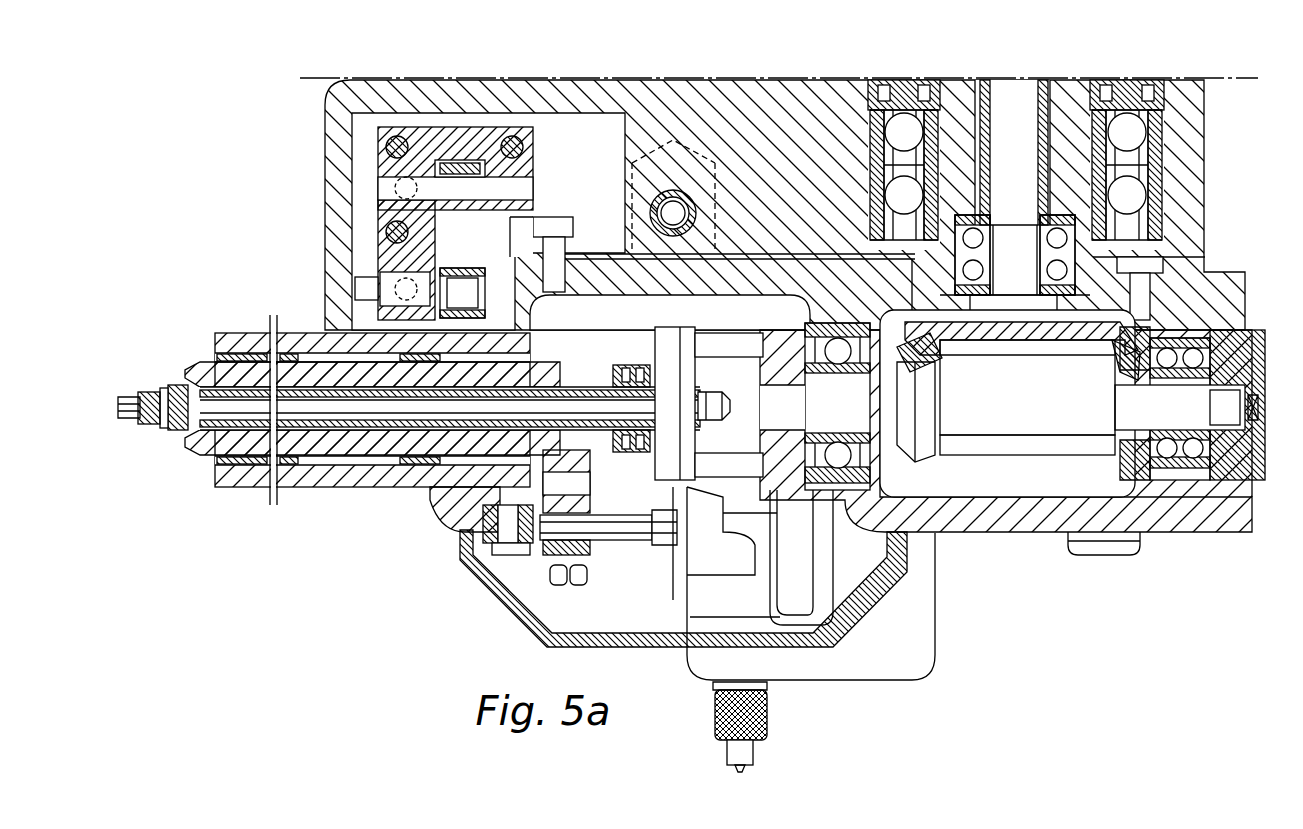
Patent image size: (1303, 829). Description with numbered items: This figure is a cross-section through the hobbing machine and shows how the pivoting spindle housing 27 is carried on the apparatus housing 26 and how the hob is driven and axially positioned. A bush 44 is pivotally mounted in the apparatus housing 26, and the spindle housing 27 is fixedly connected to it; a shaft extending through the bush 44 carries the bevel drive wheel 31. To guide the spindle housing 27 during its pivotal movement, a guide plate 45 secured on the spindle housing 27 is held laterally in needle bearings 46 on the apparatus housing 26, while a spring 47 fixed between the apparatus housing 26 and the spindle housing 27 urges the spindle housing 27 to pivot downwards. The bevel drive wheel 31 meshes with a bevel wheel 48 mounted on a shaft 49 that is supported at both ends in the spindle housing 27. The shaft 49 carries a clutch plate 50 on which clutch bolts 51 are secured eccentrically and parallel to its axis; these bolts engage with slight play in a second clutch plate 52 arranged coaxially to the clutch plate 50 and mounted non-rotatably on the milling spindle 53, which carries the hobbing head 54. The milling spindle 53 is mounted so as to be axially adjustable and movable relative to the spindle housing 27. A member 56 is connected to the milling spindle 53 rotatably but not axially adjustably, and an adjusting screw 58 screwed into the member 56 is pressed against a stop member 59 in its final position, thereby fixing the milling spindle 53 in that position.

The apparatus housing 26 is at (1190, 160).
The spindle housing 27 is at (992, 513).
The bevel drive wheel 31 is at (1040, 335).
The bush 44 is at (1100, 258).
The guide plate 45 is at (445, 255).
The needle bearings 46 is at (458, 162).
The spring 47 is at (650, 213).
The bevel wheel 48 is at (920, 445).
The shaft 49 is at (1040, 420).
The clutch plate 50 is at (793, 478).
The clutch bolts 51 is at (724, 342).
The clutch plate 52 is at (672, 465).
The milling spindle 53 is at (378, 410).
The hobbing head 54 is at (150, 395).
The member 56 is at (462, 490).
The adjusting screw 58 is at (625, 532).
The stop member 59 is at (468, 568).